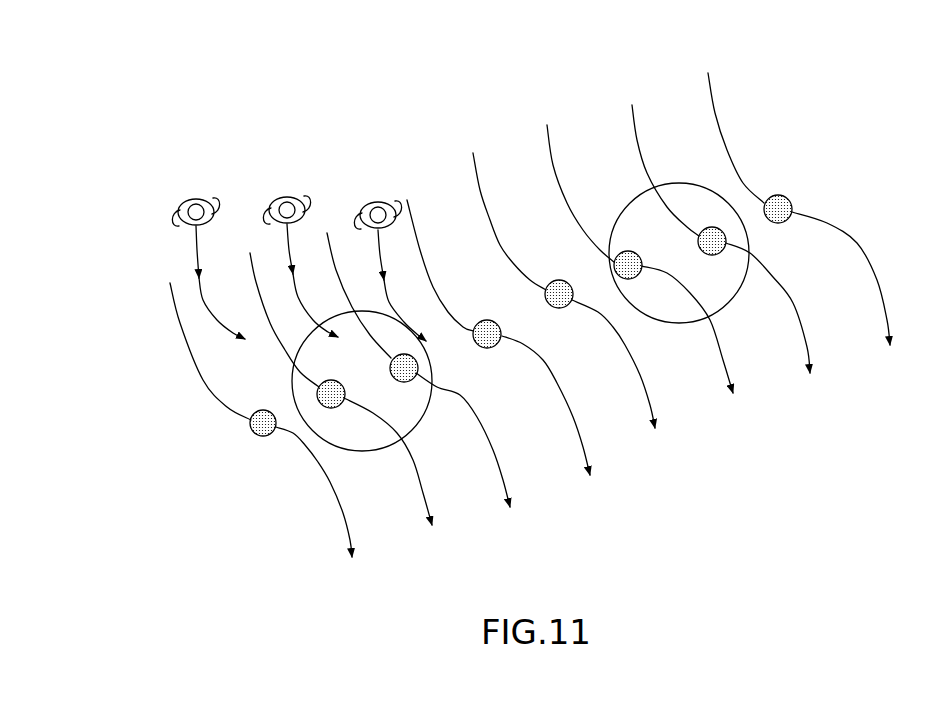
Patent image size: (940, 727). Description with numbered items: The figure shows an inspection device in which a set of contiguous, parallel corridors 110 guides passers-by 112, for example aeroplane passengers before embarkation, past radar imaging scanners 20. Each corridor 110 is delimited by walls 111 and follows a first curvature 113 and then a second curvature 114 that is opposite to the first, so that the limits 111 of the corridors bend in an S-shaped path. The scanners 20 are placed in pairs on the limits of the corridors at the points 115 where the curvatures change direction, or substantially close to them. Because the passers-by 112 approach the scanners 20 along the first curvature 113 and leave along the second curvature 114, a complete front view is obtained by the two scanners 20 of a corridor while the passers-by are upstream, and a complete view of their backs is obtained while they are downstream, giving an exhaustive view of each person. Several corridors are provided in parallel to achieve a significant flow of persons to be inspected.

The scanner 20 is at (260, 436).
The corridor 110 is at (434, 428).
The wall 111 is at (713, 103).
The passer-by 112 is at (190, 197).
The first curvature 113 is at (634, 104).
The second curvature 114 is at (780, 277).
The point where the curvatures change direction 115 is at (796, 207).